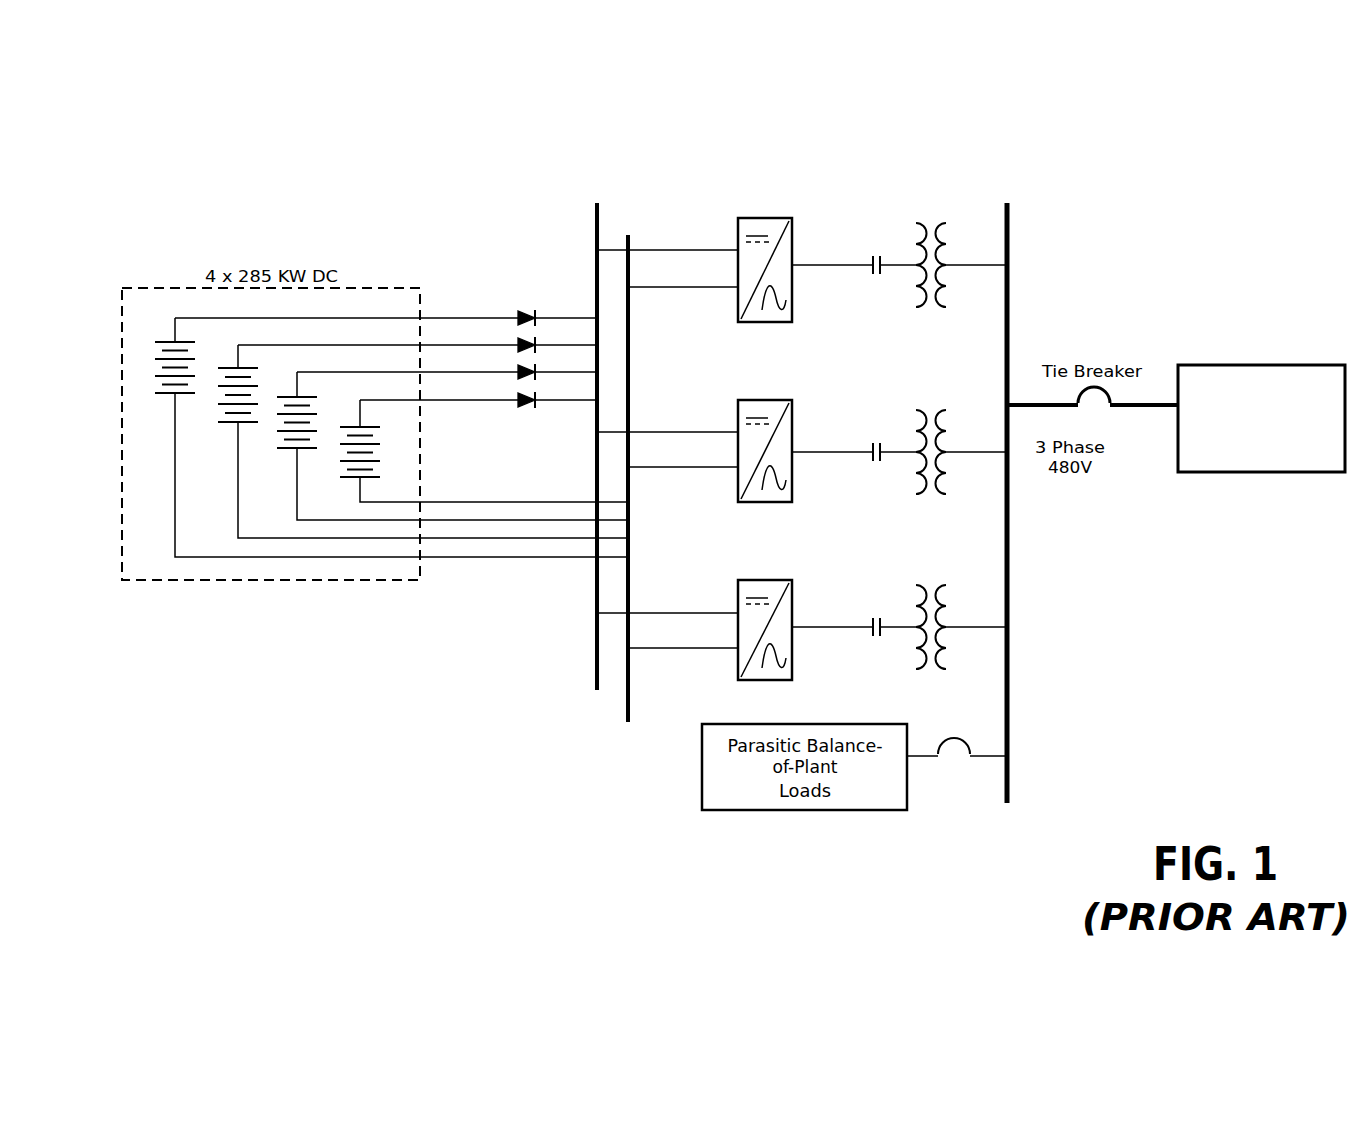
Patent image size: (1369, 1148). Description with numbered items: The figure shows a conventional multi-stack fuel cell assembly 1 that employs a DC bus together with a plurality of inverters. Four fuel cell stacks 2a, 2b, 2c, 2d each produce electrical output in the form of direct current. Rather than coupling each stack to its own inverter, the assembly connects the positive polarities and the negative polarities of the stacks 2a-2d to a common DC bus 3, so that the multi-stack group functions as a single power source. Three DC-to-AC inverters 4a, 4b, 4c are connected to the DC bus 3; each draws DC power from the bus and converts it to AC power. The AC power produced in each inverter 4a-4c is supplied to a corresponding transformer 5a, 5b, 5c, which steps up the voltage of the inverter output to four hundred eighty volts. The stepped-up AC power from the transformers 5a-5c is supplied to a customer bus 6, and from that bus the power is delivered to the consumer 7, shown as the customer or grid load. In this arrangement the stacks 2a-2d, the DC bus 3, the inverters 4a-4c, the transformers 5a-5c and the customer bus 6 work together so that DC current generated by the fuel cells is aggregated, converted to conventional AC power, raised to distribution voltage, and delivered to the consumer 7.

The multi-stack assembly 1 is at (1098, 188).
The fuel cell stack 2a is at (155, 360).
The fuel cell stack 2b is at (223, 412).
The fuel cell stack 2c is at (290, 452).
The fuel cell stack 2d is at (342, 472).
The DC bus 3 is at (634, 248).
The DC-to-AC inverter 4a is at (795, 262).
The DC-to-AC inverter 4b is at (790, 451).
The DC-to-AC inverter 4c is at (790, 626).
The transformer 5a is at (936, 228).
The transformer 5b is at (937, 413).
The transformer 5c is at (940, 590).
The customer bus 6 is at (1012, 775).
The consumer 7 is at (1282, 365).